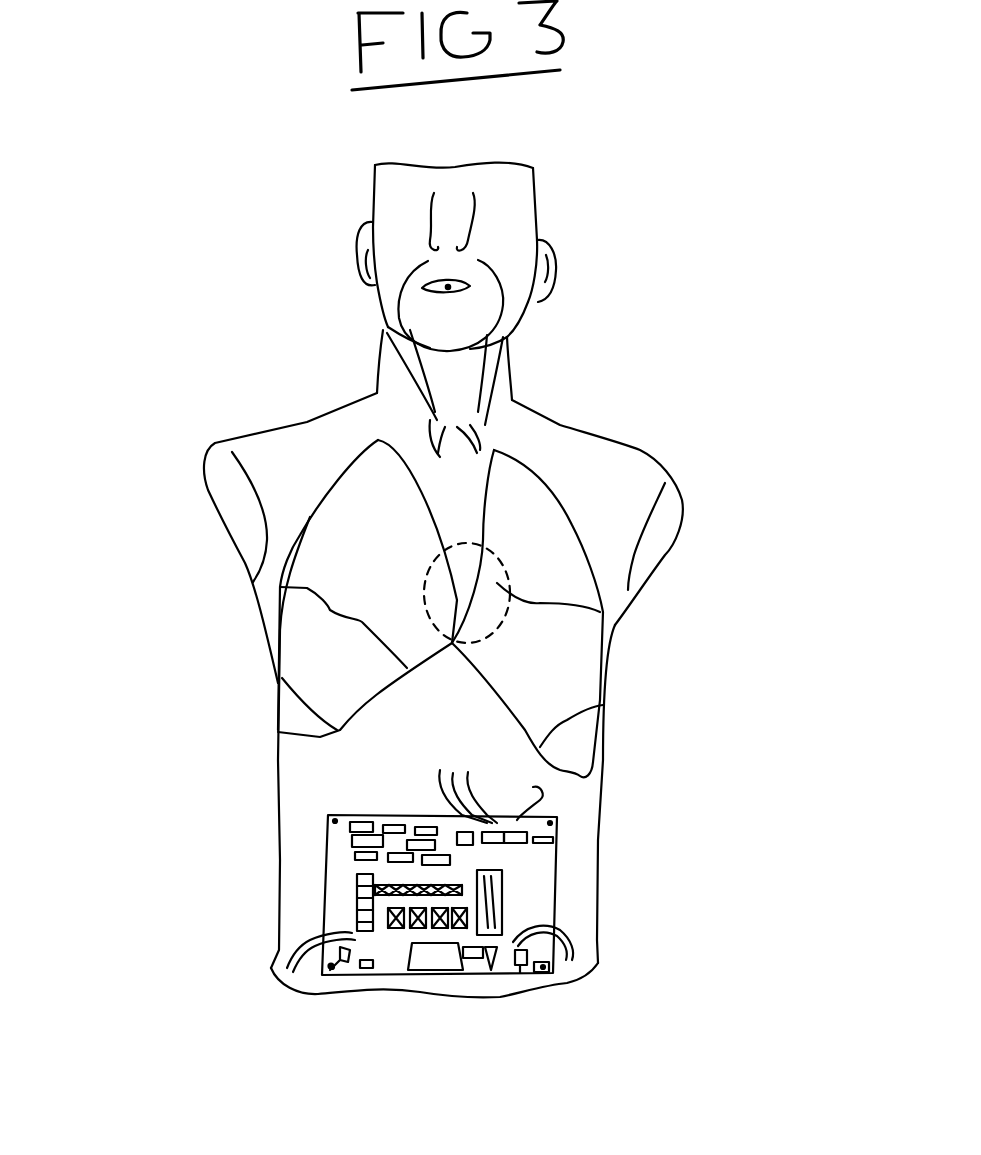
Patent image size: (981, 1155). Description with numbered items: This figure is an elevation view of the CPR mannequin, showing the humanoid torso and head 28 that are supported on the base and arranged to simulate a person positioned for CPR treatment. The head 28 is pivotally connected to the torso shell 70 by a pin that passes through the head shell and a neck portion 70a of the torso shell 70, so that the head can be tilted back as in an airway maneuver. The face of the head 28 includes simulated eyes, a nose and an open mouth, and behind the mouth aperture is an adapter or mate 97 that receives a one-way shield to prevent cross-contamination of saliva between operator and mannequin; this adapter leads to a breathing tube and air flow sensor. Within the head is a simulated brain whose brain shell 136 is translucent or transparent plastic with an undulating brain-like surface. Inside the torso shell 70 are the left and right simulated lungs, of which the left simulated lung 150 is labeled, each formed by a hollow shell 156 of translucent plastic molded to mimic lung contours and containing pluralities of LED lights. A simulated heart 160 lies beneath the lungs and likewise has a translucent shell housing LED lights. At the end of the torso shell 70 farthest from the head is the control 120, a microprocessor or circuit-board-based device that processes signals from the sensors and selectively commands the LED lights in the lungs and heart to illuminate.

The head 28 is at (547, 183).
The brain shell 136 is at (373, 207).
The adapter or mate 97 is at (473, 287).
The neck portion 70a is at (517, 367).
The torso shell 70 is at (640, 450).
The left simulated lung 150 is at (283, 677).
The hollow shell 156 is at (580, 693).
The simulated heart 160 is at (500, 583).
The control 120 is at (557, 847).